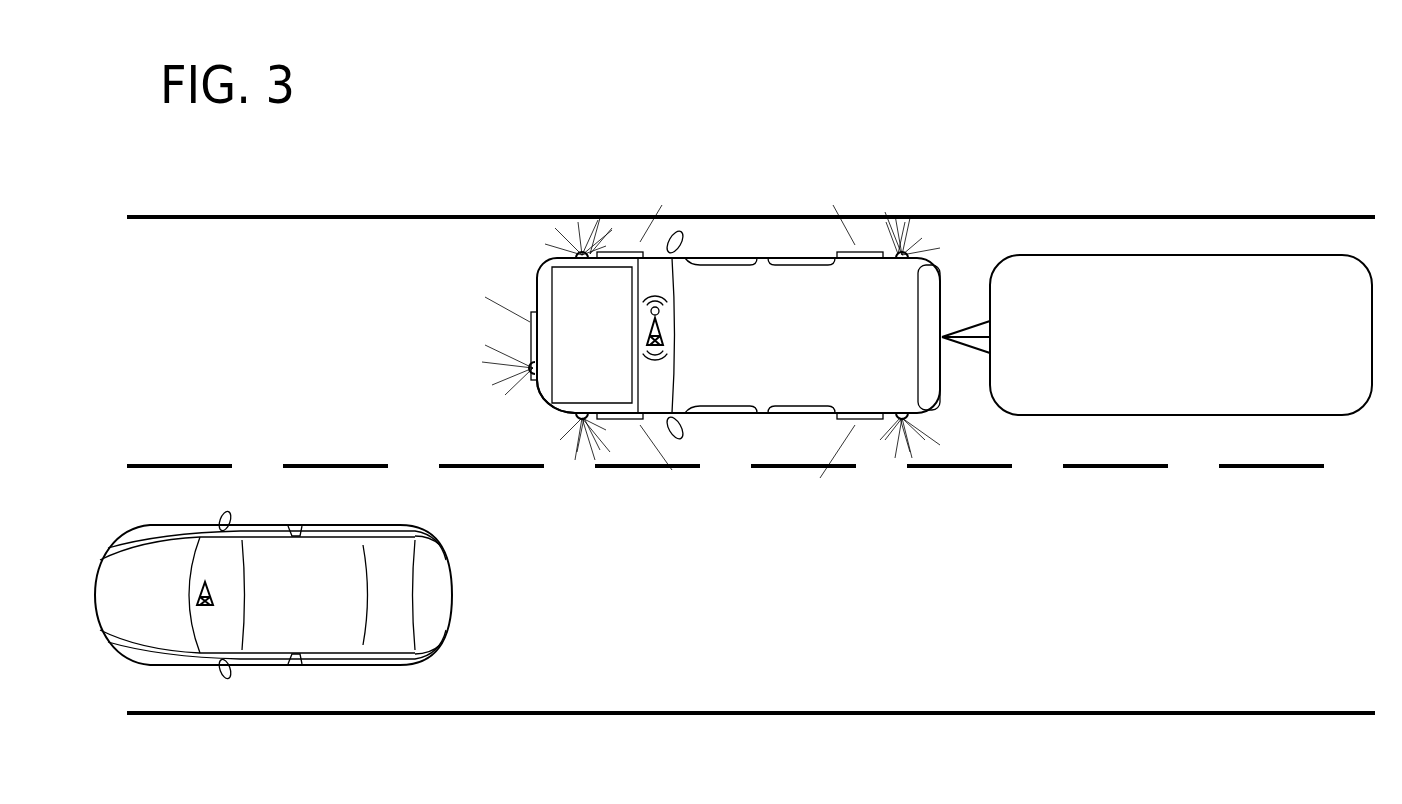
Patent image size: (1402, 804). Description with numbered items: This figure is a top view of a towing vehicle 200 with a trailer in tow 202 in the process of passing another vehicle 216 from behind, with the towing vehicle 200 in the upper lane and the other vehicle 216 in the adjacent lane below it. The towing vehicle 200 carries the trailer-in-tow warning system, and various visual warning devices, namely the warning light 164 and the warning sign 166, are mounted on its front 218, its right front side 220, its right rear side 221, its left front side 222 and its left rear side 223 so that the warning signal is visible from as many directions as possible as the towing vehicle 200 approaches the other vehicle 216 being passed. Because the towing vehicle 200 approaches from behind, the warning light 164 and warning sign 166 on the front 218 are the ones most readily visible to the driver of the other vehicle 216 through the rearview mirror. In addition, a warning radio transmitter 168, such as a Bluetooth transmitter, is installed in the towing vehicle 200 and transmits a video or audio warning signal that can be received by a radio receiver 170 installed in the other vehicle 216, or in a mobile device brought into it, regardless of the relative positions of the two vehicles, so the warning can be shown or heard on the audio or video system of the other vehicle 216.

The warning light 164 is at (582, 252).
The warning sign 166 is at (625, 252).
The warning radio transmitter 168 is at (660, 332).
The radio receiver 170 is at (205, 605).
The towing vehicle 200 is at (832, 349).
The trailer in tow 202 is at (1204, 349).
The other vehicle 216 is at (325, 606).
The front 218 is at (548, 395).
The right front side 220 is at (590, 252).
The right rear side 221 is at (896, 252).
The left front side 222 is at (588, 420).
The left rear side 223 is at (893, 420).